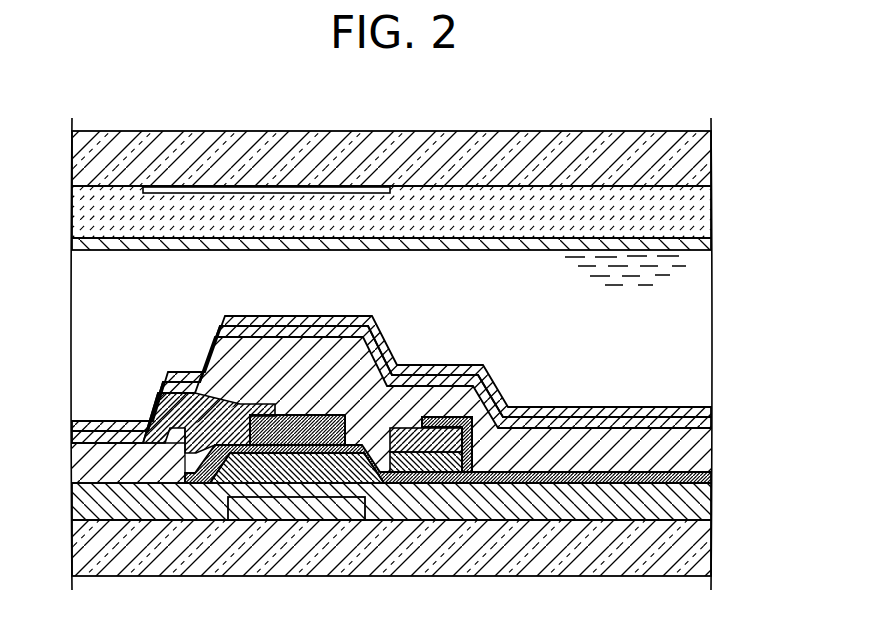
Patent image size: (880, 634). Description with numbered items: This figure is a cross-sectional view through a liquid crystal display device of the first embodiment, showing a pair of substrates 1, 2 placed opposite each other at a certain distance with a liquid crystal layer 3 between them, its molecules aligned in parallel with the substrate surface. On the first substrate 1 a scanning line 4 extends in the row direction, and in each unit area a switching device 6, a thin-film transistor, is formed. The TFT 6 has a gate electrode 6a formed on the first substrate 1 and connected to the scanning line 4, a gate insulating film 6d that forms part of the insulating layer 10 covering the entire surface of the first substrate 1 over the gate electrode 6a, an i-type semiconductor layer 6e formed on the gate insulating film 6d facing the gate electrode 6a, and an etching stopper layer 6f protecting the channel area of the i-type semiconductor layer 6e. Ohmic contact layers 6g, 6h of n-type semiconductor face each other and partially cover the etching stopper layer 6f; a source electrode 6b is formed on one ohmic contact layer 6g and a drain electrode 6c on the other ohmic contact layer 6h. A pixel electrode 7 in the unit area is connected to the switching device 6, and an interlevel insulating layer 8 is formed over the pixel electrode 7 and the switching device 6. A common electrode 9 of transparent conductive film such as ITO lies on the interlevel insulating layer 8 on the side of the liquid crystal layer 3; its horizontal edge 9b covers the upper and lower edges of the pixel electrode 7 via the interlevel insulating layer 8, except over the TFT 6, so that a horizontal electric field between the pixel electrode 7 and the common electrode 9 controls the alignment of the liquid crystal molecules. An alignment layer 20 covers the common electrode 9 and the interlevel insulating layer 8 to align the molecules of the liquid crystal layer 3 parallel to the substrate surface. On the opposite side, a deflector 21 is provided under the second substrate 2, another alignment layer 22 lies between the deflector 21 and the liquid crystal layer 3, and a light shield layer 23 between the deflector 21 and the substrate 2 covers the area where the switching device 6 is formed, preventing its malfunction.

The first substrate 1 is at (707, 548).
The second substrate 2 is at (702, 160).
The liquid crystal layer 3 is at (702, 284).
The scanning line 4 is at (296, 562).
The switching device 6 is at (175, 512).
The gate electrode 6a is at (293, 522).
The source electrode 6b is at (167, 375).
The drain electrode 6c is at (362, 395).
The gate insulating film 6d is at (226, 512).
The i-type semiconductor layer 6e is at (412, 487).
The etching stopper layer 6f is at (297, 413).
The ohmic contact layer 6g is at (180, 466).
The ohmic contact layer 6h is at (425, 415).
The pixel electrode 7 is at (707, 478).
The interlevel insulating layer 8 is at (707, 452).
The common electrode 9 is at (707, 424).
The horizontal edge 9b is at (620, 423).
The insulating layer 10 is at (707, 500).
The alignment layer 20 is at (705, 416).
The deflector 21 is at (702, 212).
The alignment layer 22 is at (702, 243).
The light shield layer 23 is at (317, 188).